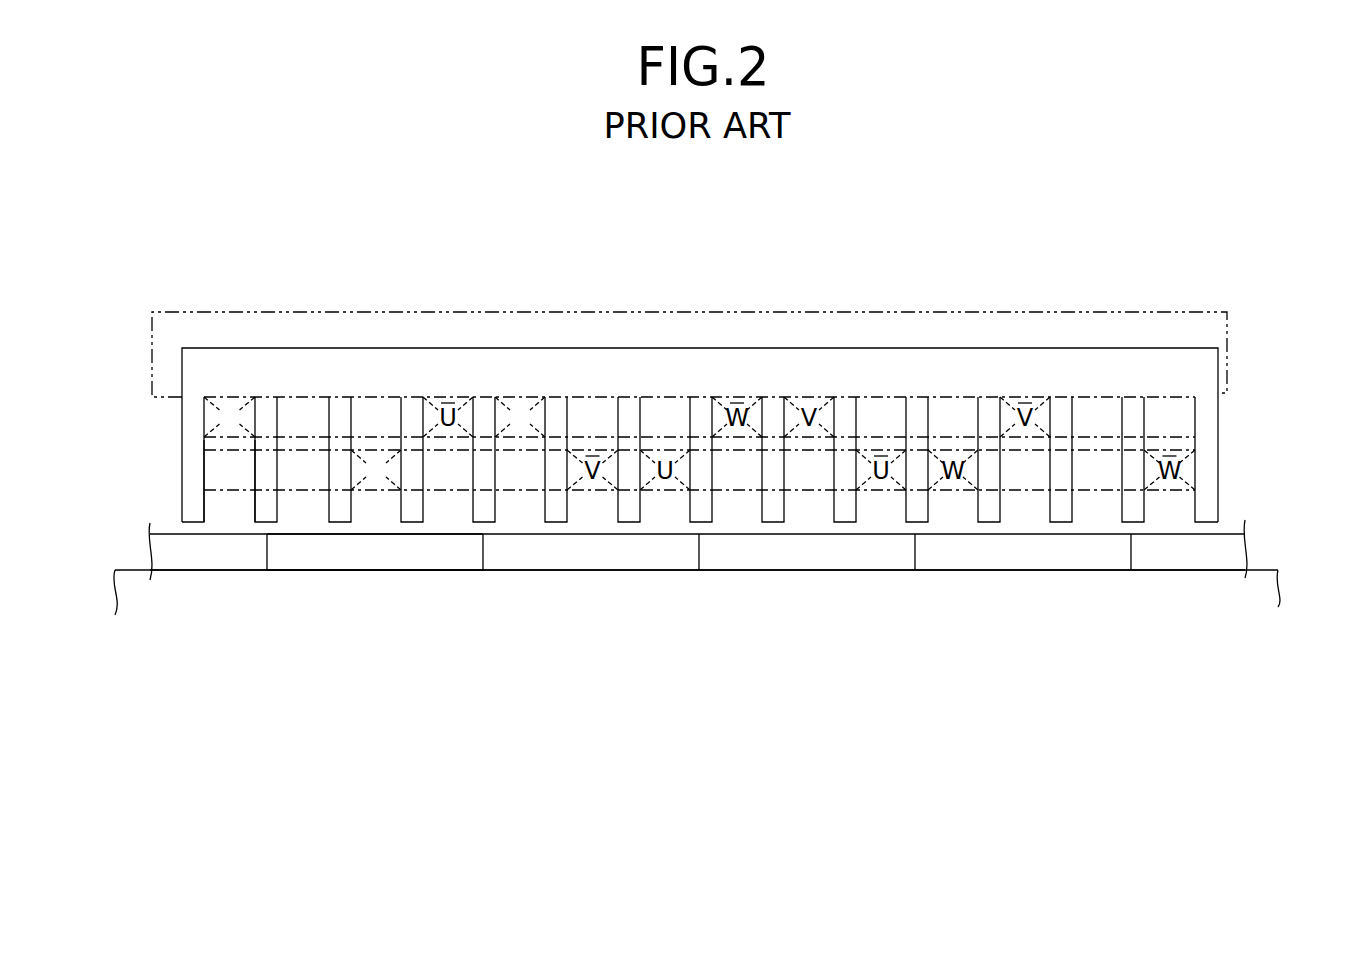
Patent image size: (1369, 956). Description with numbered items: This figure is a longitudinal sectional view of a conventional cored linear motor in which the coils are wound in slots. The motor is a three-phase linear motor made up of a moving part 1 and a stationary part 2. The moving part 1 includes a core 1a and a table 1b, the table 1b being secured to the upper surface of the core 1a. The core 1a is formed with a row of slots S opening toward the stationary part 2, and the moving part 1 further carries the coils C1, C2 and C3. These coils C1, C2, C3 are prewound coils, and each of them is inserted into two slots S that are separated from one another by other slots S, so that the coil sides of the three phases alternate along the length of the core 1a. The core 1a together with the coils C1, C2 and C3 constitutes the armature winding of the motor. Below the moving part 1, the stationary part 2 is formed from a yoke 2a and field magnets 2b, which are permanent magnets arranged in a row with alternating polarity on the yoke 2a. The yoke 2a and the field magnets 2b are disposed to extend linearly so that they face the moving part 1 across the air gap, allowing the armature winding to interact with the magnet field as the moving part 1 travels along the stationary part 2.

The moving part 1 is at (1262, 357).
The core 1a is at (193, 372).
The table 1b is at (1003, 312).
The stationary part 2 is at (1275, 553).
The yoke 2a is at (1253, 600).
The field magnets 2b is at (280, 557).
The slots S is at (218, 470).
The coil C1 is at (232, 397).
The coil C2 is at (517, 397).
The coil C3 is at (387, 492).